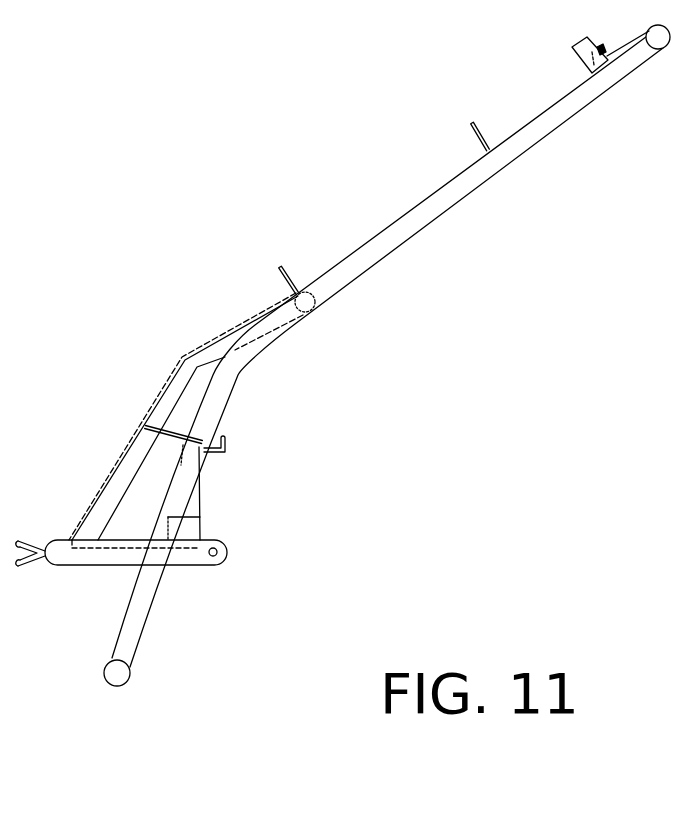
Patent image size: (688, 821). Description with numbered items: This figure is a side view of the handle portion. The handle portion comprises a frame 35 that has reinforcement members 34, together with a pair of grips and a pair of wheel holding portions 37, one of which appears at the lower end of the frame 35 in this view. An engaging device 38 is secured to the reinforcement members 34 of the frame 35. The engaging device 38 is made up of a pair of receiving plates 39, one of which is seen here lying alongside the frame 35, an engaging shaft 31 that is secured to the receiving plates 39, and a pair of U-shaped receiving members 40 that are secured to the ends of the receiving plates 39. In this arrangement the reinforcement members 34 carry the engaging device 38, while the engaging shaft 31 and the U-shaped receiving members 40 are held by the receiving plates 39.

The engaging shaft 31 is at (218, 552).
The reinforcement members 34 is at (313, 308).
The frame 35 is at (568, 108).
The wheel holding portions 37 is at (123, 678).
The engaging device 38 is at (145, 413).
The receiving plates 39 is at (96, 560).
The U-shaped receiving members 40 is at (23, 564).